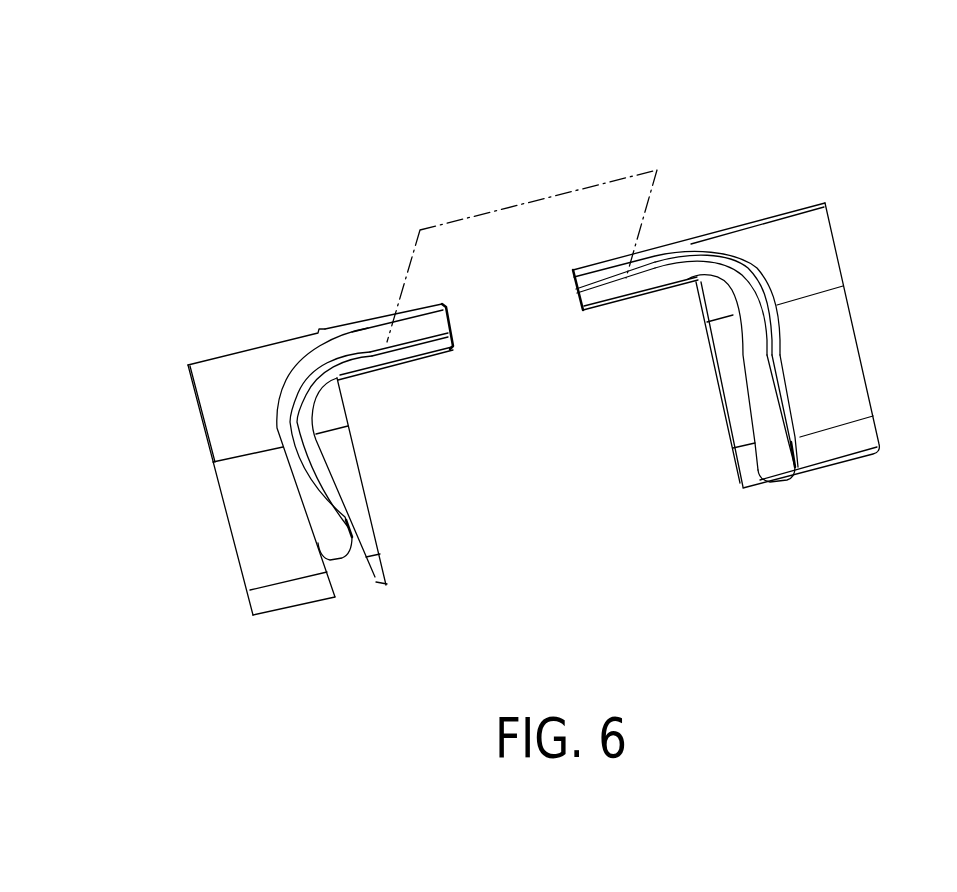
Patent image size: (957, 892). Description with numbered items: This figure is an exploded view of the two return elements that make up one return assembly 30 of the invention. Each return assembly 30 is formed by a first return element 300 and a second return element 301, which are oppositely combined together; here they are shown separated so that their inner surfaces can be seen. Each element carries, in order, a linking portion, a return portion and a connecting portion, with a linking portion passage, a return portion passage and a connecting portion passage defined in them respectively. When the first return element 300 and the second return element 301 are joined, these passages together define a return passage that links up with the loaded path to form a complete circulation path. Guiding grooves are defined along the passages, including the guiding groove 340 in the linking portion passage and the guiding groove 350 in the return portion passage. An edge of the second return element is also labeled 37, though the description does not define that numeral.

The return assembly 30 is at (630, 38).
The first return element 300 is at (249, 332).
The second return element 301 is at (711, 214).
The guiding groove 340 is at (320, 473).
The guiding groove 350 is at (747, 262).
The side edge 37 is at (773, 348).